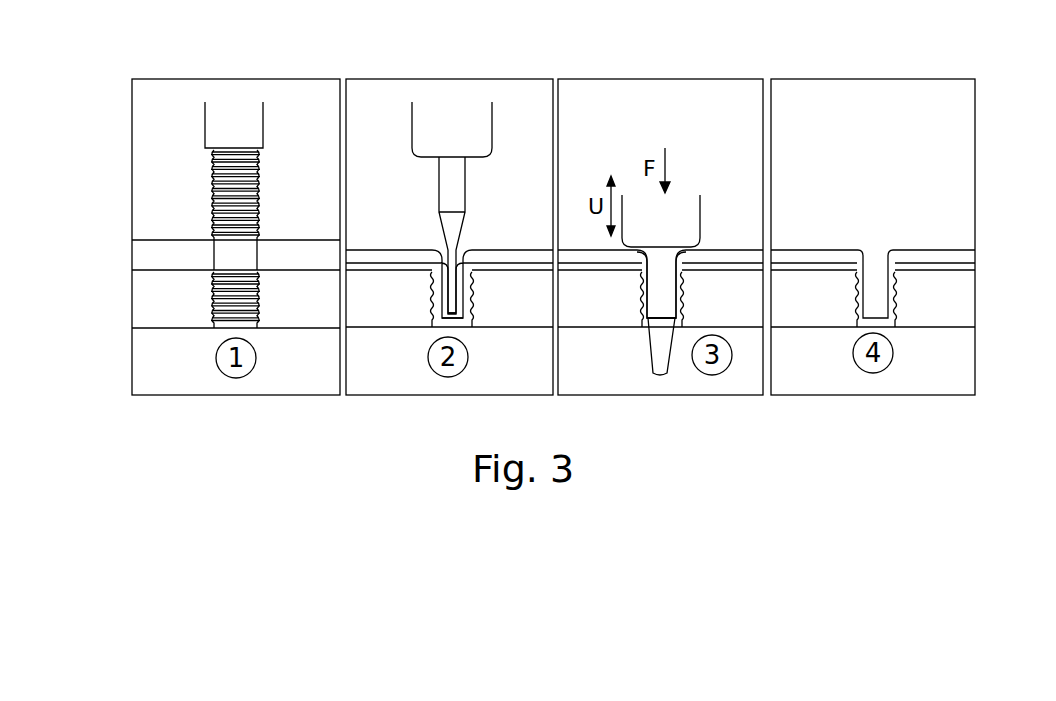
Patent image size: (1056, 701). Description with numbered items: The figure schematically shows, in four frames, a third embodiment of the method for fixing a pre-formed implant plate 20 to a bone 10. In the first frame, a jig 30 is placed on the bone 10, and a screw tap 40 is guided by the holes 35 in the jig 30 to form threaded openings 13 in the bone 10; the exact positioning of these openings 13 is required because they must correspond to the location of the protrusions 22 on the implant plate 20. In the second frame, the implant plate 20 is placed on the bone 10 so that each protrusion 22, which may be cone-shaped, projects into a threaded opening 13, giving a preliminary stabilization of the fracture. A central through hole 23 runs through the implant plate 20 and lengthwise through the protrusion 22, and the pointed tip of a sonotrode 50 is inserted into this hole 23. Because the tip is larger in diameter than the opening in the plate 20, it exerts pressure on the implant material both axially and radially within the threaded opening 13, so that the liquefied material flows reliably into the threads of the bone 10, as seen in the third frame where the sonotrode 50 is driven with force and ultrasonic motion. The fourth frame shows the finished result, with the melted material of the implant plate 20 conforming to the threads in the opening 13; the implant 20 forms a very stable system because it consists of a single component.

The bone 10 is at (146, 300).
The threaded openings 13 is at (226, 305).
The implant plate 20 is at (718, 247).
The protrusions 22 is at (463, 295).
The central through hole 23 is at (448, 318).
The jig 30 is at (146, 255).
The holes in the jig 35 is at (227, 257).
The screw tap 40 is at (212, 124).
The sonotrode 50 is at (428, 128).